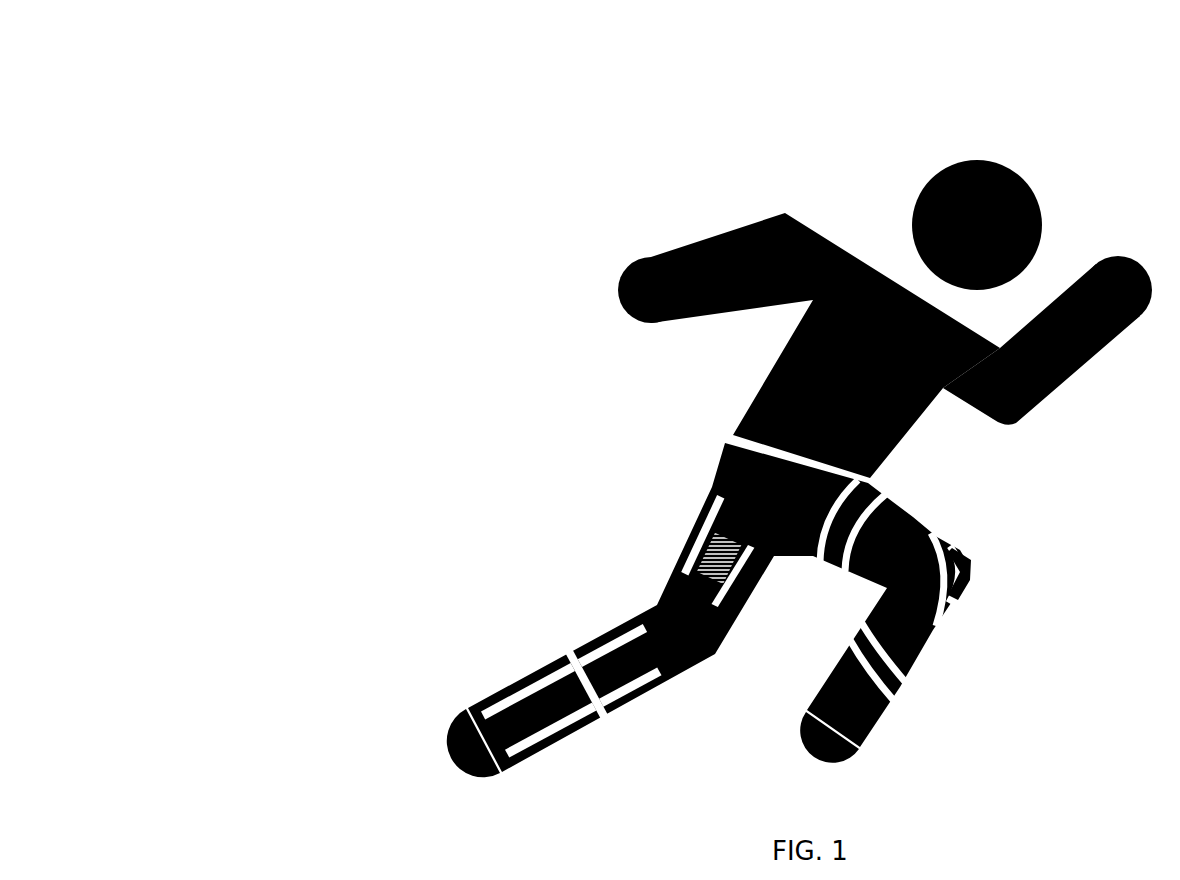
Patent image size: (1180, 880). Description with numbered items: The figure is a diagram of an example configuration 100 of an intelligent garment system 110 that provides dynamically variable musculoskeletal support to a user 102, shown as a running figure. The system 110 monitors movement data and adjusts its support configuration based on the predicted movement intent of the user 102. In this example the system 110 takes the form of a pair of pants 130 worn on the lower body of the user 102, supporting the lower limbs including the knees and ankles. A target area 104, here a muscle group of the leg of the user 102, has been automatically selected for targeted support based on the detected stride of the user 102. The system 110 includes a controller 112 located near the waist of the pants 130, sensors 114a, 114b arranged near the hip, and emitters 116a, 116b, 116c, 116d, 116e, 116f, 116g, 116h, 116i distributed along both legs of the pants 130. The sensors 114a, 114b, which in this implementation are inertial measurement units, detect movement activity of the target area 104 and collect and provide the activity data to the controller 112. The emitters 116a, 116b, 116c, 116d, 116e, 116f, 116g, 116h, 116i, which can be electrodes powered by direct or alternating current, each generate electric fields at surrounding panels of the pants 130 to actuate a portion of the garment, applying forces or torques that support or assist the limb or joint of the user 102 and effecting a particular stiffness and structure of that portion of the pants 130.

The example configuration 100 is at (686, 398).
The user 102 is at (1096, 352).
The target area 104 is at (702, 567).
The intelligent garment system 110 is at (763, 600).
The controller 112 is at (728, 458).
The sensor 114a is at (722, 492).
The sensor 114b is at (772, 523).
The emitter 116a is at (522, 682).
The emitter 116b is at (603, 638).
The emitter 116c is at (688, 538).
The emitter 116d is at (548, 733).
The emitter 116e is at (640, 688).
The emitter 116f is at (733, 593).
The emitter 116g is at (873, 502).
The emitter 116h is at (940, 610).
The emitter 116i is at (890, 688).
The pants 130 is at (985, 562).